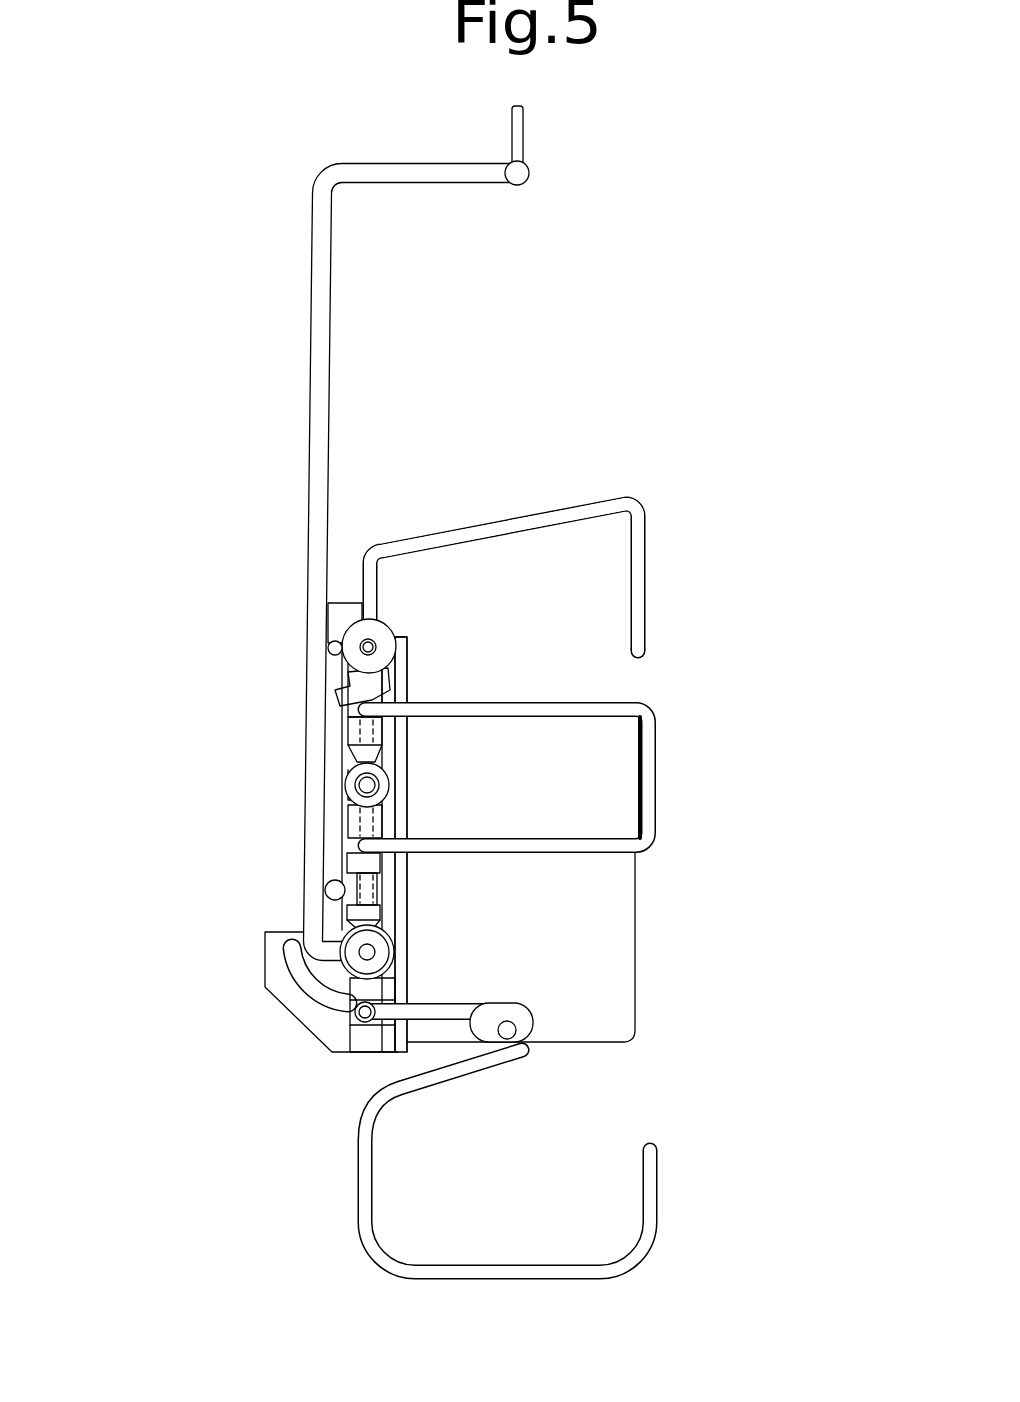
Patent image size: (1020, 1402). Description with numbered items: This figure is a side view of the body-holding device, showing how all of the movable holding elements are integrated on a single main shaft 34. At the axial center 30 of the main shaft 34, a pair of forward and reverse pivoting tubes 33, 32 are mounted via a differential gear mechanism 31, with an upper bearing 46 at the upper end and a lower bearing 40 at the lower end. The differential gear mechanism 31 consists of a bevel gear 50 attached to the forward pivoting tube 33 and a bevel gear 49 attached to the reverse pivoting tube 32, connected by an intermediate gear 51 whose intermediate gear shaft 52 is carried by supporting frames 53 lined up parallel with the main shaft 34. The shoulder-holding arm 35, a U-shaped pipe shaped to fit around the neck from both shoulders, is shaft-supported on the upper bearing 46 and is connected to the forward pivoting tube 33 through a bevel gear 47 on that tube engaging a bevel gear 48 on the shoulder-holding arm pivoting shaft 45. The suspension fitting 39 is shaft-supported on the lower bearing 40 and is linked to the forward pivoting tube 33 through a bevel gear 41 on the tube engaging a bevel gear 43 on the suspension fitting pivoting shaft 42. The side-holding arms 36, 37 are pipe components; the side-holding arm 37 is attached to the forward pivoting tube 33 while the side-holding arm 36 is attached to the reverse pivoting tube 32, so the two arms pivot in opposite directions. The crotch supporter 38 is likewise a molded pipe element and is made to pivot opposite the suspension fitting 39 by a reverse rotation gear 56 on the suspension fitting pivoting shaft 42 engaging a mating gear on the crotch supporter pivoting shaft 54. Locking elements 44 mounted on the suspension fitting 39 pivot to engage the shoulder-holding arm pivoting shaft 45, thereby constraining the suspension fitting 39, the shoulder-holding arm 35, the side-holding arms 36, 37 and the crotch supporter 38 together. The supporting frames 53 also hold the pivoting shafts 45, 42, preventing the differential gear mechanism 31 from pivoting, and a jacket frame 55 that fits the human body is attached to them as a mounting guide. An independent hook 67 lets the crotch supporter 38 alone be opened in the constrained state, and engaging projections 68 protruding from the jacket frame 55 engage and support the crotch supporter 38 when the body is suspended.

The axial center 30 is at (446, 882).
The differential gear mechanism 31 is at (330, 800).
The reverse pivoting tube 32 is at (340, 700).
The forward pivoting tube 33 is at (385, 730).
The main shaft 34 is at (398, 865).
The shoulder-holding arm 35 is at (540, 513).
The side-holding arm 36 is at (571, 746).
The side-holding arm 37 is at (615, 708).
The crotch supporter 38 is at (362, 1195).
The suspension fitting 39 is at (316, 186).
The lower bearing 40 is at (385, 990).
The bevel gear 41 is at (383, 917).
The suspension fitting pivoting shaft 42 is at (395, 950).
The bevel gear 43 is at (255, 992).
The locking elements 44 is at (344, 612).
The shoulder-holding arm pivoting shaft 45 is at (356, 636).
The upper bearing 46 is at (372, 628).
The bevel gear 47 is at (340, 652).
The bevel gear 48 is at (395, 660).
The bevel gear 49 is at (380, 832).
The bevel gear 50 is at (390, 746).
The intermediate gear 51 is at (350, 775).
The intermediate gear shaft 52 is at (340, 790).
The supporting frames 53 is at (398, 690).
The crotch supporter pivoting shaft 54 is at (365, 1013).
The jacket frame 55 is at (625, 1035).
The reverse rotation gear 56 is at (343, 967).
The independent hook 67 is at (345, 1010).
The engaging projections 68 is at (510, 1030).